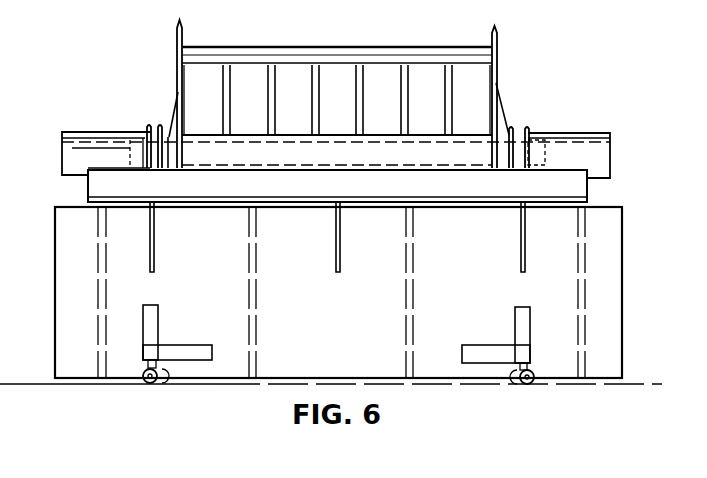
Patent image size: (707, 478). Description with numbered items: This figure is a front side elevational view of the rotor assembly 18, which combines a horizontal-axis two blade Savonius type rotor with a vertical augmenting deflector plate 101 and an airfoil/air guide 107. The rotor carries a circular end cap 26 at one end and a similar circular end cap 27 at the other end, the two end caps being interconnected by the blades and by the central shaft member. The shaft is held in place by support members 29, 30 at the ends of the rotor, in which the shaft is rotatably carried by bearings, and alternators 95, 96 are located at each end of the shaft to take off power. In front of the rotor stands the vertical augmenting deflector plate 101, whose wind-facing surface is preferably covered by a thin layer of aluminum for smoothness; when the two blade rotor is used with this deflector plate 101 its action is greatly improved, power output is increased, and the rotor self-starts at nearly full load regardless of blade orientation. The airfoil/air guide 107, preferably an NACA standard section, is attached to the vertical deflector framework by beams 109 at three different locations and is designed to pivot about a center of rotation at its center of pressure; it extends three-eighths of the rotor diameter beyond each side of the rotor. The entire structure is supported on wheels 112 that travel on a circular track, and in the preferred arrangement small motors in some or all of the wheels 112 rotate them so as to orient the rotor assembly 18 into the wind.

The rotor assembly 18 is at (527, 41).
The circular end cap 26 is at (497, 77).
The circular end cap 27 is at (177, 48).
The support member 29 is at (149, 126).
The support member 30 is at (516, 131).
The alternator 95 is at (77, 136).
The alternator 96 is at (604, 134).
The vertical augmenting deflector plate 101 is at (628, 283).
The airfoil/air guide 107 is at (88, 189).
The beams 109 is at (156, 263).
The wheels 112 is at (152, 386).